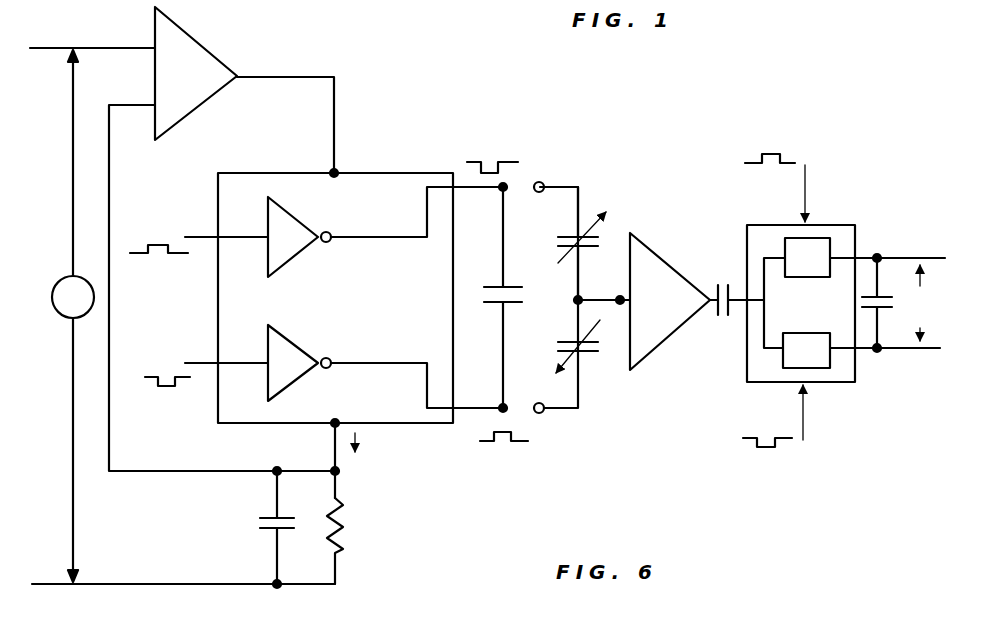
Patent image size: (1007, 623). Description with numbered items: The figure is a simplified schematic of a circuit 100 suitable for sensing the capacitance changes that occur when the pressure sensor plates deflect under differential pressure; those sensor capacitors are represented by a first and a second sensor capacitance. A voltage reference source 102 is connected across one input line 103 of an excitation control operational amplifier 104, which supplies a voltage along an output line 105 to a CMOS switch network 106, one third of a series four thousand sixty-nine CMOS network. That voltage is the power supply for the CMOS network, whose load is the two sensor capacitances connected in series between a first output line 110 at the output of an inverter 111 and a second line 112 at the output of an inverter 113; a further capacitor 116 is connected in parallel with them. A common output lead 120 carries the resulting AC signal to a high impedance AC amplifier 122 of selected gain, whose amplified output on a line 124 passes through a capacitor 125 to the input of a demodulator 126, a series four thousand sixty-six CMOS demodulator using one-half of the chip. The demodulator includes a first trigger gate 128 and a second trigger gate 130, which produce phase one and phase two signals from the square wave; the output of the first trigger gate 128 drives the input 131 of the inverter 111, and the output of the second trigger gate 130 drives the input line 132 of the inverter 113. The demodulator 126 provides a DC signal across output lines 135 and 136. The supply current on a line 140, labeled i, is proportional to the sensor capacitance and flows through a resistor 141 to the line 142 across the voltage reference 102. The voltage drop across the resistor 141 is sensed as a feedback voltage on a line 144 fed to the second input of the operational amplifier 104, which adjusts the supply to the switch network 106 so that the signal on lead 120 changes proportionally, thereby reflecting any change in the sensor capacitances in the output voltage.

The circuit 100 is at (534, 159).
The voltage reference source 102 is at (58, 313).
The input line 103 is at (108, 48).
The excitation control operational amplifier 104 is at (205, 46).
The output line 105 is at (302, 75).
The CMOS switch network 106 is at (262, 172).
The first output line 110 is at (466, 185).
The inverter 111 is at (302, 213).
The second line 112 is at (470, 410).
The inverter 113 is at (285, 338).
The capacitor 116 is at (494, 311).
The common output lead 120 is at (603, 303).
The AC amplifier 122 is at (656, 350).
The line 124 is at (712, 287).
The capacitor 125 is at (726, 318).
The demodulator 126 is at (785, 226).
The first trigger gate 128 is at (783, 250).
The second trigger gate 130 is at (785, 371).
The input 131 is at (200, 236).
The input line 132 is at (203, 365).
The output line 135 is at (865, 257).
The output line 136 is at (900, 350).
The line 140 is at (337, 461).
The resistor 141 is at (340, 553).
The line 142 is at (143, 584).
The line 144 is at (153, 472).